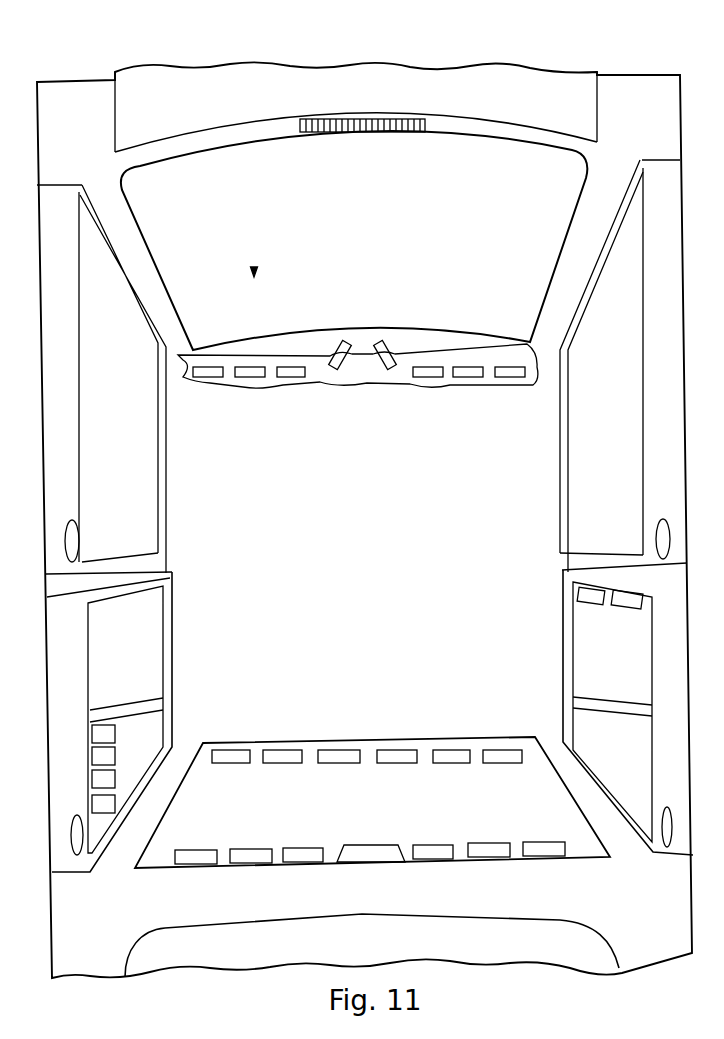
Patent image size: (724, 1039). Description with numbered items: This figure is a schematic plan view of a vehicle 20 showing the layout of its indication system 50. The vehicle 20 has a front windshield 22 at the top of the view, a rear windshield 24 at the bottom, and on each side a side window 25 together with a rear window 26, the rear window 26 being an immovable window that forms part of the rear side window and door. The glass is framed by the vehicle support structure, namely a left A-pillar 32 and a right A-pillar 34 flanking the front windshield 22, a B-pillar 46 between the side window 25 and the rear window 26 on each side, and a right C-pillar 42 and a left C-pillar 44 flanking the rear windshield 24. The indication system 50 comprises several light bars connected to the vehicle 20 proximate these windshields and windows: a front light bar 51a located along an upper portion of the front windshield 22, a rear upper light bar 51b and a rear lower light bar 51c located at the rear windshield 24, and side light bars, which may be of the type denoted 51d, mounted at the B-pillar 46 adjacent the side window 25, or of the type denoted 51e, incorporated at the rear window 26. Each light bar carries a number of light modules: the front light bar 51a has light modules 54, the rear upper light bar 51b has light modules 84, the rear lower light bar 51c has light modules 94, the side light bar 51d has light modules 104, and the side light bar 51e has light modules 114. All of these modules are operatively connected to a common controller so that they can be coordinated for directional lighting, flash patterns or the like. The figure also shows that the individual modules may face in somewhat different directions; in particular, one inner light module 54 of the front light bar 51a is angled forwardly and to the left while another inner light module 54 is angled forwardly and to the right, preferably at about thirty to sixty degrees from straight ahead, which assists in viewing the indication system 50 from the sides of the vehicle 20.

The vehicle 20 is at (88, 45).
The front windshield 22 is at (375, 234).
The rear windshield 24 is at (382, 822).
The side window 25 is at (133, 444).
The rear window 26 is at (149, 749).
The left A-pillar 32 is at (143, 265).
The right A-pillar 34 is at (570, 255).
The right C-pillar 42 is at (160, 797).
The left C-pillar 44 is at (583, 785).
The B-pillar 46 is at (128, 566).
The indication system 50 is at (254, 267).
The front light bar 51a is at (328, 414).
The rear upper light bar 51b is at (305, 729).
The rear lower light bar 51c is at (270, 892).
The side light bar 51d is at (578, 615).
The side light bar 51e is at (74, 764).
The light module 54 is at (337, 350).
The light module 84 is at (224, 757).
The light module 94 is at (195, 857).
The light module 104 is at (585, 590).
The light module 114 is at (104, 748).